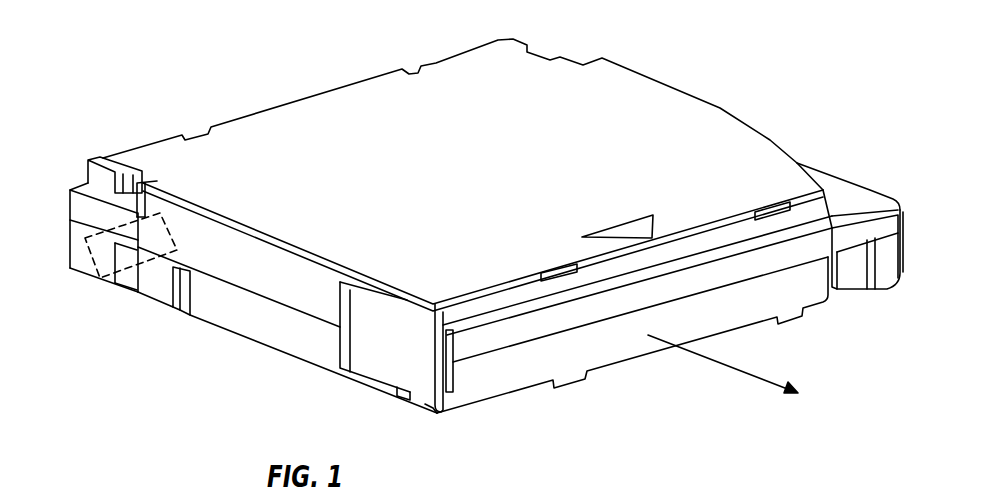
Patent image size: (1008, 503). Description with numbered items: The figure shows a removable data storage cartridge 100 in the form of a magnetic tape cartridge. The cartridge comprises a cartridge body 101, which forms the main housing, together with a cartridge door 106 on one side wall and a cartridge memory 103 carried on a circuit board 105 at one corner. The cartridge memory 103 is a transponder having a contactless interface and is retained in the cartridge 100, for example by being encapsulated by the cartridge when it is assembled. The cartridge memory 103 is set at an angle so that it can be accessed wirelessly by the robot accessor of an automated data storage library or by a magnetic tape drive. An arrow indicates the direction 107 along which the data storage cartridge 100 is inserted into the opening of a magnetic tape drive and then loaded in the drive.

The removable data storage cartridge 100 is at (808, 85).
The cartridge body 101 is at (365, 78).
The cartridge memory 103 is at (122, 176).
The circuit board 105 is at (100, 253).
The cartridge door 106 is at (393, 343).
The direction 107 is at (748, 362).